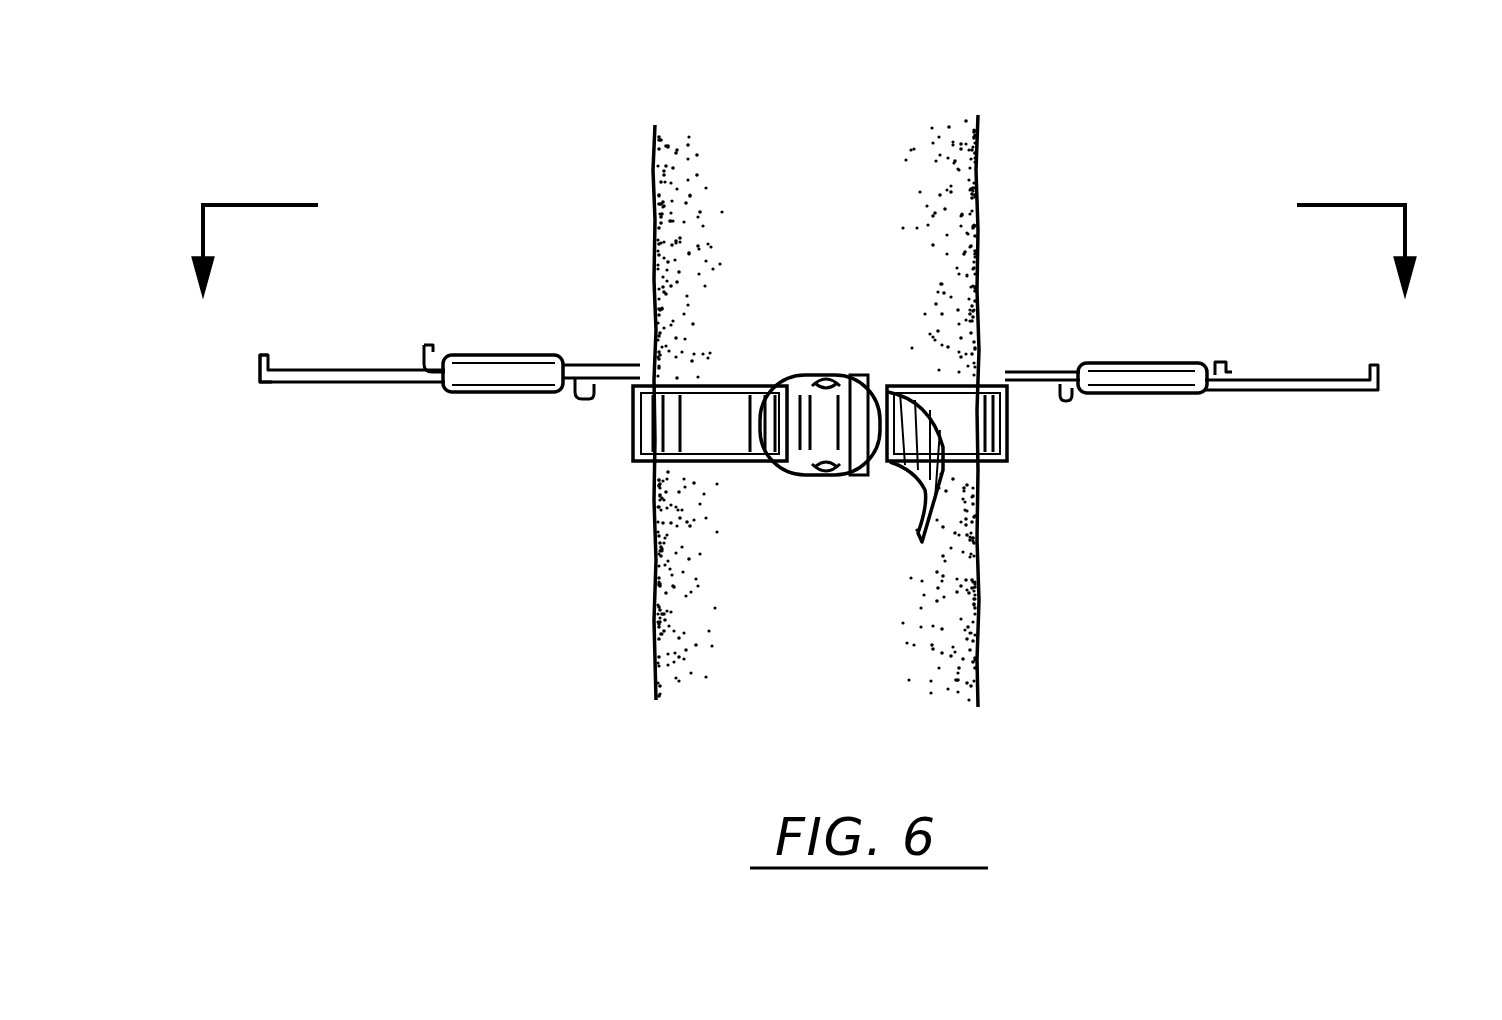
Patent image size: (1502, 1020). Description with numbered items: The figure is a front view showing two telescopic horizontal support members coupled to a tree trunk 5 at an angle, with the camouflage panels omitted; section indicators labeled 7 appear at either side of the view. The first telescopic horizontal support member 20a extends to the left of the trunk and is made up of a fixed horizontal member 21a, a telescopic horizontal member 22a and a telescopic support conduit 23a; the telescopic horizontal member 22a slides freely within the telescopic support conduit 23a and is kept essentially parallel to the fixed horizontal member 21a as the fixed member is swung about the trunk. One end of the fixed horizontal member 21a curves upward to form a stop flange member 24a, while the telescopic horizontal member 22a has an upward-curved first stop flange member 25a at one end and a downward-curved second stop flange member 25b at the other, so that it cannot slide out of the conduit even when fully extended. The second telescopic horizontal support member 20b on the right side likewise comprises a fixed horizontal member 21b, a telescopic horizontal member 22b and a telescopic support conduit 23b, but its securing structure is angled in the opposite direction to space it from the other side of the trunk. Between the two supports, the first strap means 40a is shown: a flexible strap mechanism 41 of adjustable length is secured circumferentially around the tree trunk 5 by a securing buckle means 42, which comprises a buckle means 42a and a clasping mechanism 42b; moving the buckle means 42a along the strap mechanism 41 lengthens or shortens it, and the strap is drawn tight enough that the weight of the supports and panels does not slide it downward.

The tree trunk 5 is at (945, 668).
The section line 7 is at (806, 251).
The first telescopic horizontal support member 20a is at (458, 262).
The second telescopic horizontal support member 20b is at (1147, 245).
The fixed horizontal member 21a is at (600, 382).
The fixed horizontal member 21b is at (1040, 376).
The telescopic horizontal member 22a is at (322, 383).
The telescopic horizontal member 22b is at (1322, 393).
The telescopic support conduit 23a is at (478, 378).
The telescopic support conduit 23b is at (1142, 375).
The stop flange member 24a is at (430, 355).
The first stop flange member 25a is at (252, 364).
The second stop flange member 25b is at (575, 393).
The first strap means 40a is at (1010, 448).
The flexible strap mechanism 41 is at (655, 462).
The securing buckle means 42 is at (802, 457).
The buckle means 42a is at (840, 378).
The clasping mechanism 42b is at (800, 470).